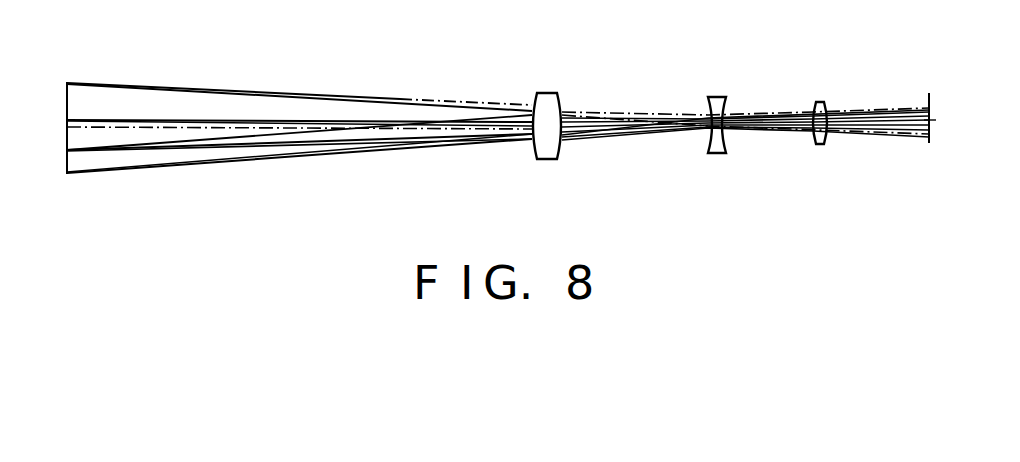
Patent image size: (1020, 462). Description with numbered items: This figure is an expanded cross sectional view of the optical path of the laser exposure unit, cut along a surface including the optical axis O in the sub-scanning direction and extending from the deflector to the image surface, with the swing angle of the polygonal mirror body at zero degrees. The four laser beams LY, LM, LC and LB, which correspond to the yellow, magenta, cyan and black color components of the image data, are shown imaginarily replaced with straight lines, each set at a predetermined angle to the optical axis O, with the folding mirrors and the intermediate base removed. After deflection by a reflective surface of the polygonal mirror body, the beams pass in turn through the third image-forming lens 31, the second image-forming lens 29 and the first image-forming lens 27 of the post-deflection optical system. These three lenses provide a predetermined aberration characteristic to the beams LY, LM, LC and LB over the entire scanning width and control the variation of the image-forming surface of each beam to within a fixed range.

The optical axis O is at (97, 134).
The first laser beam LY is at (140, 83).
The second laser beam LM is at (197, 120).
The third laser beam LC is at (195, 148).
The fourth laser beam LB is at (142, 172).
The third image-forming lens 31 is at (545, 93).
The second image-forming lens 29 is at (716, 97).
The first image-forming lens 27 is at (820, 102).